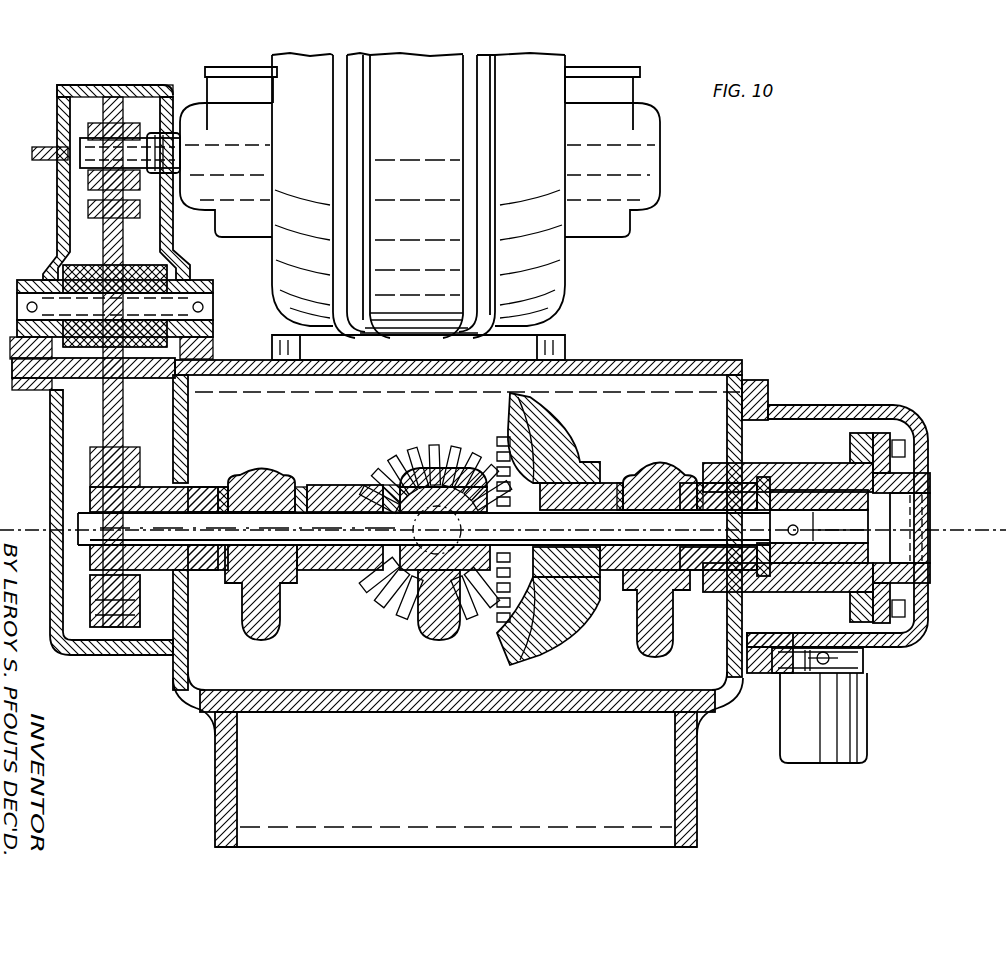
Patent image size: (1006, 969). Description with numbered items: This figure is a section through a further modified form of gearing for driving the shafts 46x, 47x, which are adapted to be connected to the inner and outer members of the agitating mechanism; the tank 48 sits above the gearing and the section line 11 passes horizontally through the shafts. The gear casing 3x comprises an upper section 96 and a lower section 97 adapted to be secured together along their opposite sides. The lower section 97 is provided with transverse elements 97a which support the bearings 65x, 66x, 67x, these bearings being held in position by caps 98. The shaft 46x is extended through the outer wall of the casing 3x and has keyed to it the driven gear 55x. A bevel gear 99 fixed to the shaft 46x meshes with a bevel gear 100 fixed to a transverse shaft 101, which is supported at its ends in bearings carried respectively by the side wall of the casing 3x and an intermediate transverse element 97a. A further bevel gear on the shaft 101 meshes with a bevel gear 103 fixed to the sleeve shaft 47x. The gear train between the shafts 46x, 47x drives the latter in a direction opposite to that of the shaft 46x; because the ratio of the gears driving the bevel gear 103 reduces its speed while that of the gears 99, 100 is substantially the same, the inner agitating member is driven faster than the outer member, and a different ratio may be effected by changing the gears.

The section line 11- 11 is at (978, 530).
The refrigerant tank / heat exchanger 48 is at (561, 284).
The upper section 96 is at (745, 377).
The lower section 97 is at (189, 660).
The transverse elements 97a is at (278, 627).
The gear casing 3x is at (288, 700).
The shaft 46x is at (202, 523).
The sleeve shaft 47x is at (587, 580).
The caps 98 is at (252, 477).
The bearing 65x is at (333, 481).
The bearing 66x is at (404, 458).
The bevel gear 100 is at (434, 452).
The bevel gear 99 is at (383, 582).
The transverse shaft 101 is at (462, 520).
The bevel gear 103 is at (513, 657).
The bearing 67x is at (633, 460).
The driven gear 55x is at (100, 631).